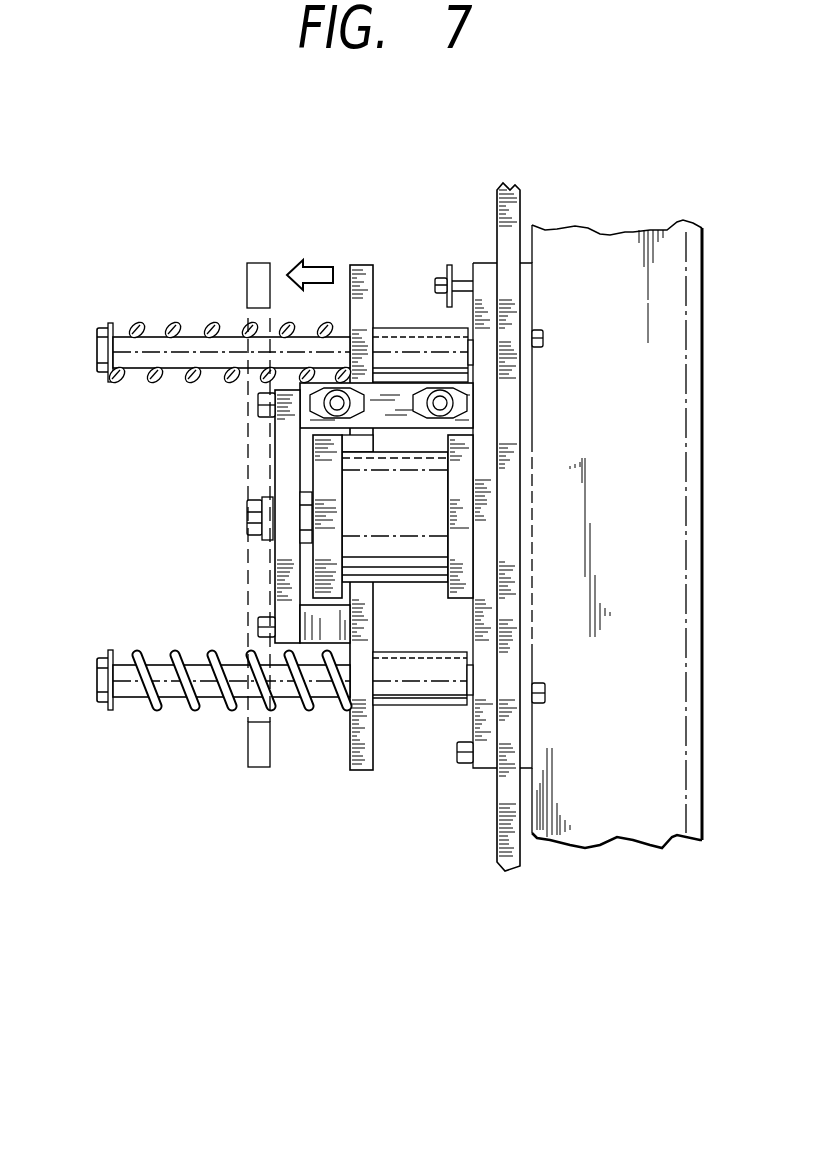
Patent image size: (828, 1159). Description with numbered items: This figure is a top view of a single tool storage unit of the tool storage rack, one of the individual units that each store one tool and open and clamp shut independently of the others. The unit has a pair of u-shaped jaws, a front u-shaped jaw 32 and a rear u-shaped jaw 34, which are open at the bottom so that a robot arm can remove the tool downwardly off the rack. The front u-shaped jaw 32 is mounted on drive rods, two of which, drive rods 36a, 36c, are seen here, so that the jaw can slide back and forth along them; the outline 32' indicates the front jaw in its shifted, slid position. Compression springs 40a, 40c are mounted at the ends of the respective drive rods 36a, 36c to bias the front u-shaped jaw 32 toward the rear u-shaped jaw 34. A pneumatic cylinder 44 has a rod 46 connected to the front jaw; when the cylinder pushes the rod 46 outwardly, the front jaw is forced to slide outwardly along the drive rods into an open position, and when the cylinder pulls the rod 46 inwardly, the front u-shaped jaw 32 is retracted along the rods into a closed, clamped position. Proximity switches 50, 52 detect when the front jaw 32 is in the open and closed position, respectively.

The front u-shaped jaw 32 is at (361, 586).
The front u-shaped jaw (shifted position) 32' is at (260, 573).
The u-shaped jaw 34 is at (507, 803).
The drive rod 36a is at (150, 355).
The drive rod 36c is at (165, 677).
The compression spring 40a is at (172, 333).
The compression spring 40c is at (137, 657).
The pneumatic cylinder 44 is at (358, 502).
The rod 46 is at (262, 509).
The proximity switch 50 is at (338, 403).
The proximity switch 52 is at (440, 403).